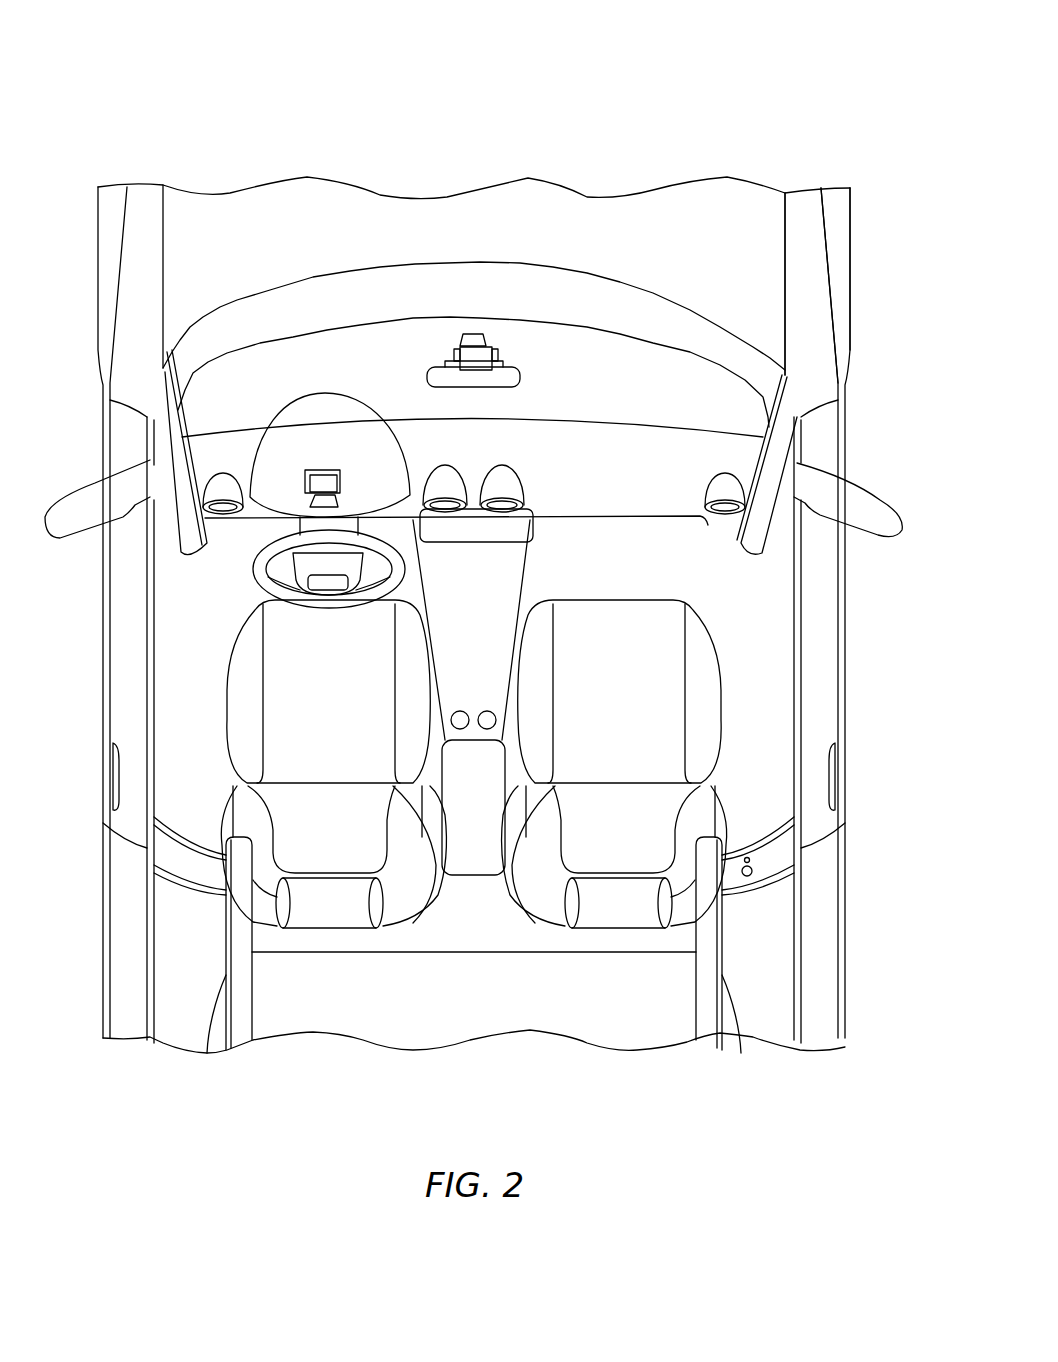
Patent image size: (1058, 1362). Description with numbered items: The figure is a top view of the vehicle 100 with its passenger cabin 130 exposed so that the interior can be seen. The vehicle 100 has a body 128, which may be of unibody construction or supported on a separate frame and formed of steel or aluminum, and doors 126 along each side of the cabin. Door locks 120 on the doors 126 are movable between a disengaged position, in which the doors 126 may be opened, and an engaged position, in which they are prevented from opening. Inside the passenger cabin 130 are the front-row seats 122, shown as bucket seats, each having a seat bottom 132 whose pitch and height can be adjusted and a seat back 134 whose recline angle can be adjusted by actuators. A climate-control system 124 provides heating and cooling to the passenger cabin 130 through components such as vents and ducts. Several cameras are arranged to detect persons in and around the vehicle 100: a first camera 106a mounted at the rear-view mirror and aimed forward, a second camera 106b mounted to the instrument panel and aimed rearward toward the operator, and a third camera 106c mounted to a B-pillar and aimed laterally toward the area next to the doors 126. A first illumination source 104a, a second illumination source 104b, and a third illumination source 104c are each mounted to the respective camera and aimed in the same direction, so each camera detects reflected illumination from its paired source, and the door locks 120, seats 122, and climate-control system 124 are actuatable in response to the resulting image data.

The vehicle 100 is at (212, 76).
The first illumination source 104a is at (495, 345).
The second illumination source 104b is at (305, 484).
The third illumination source 104c is at (748, 856).
The first camera 106a is at (455, 347).
The second camera 106b is at (340, 478).
The third camera 106c is at (748, 877).
The door locks 120 is at (110, 782).
The seats 122 is at (425, 628).
The climate-control system 124 is at (537, 490).
The doors 126 is at (123, 670).
The body 128 is at (812, 290).
The passenger cabin 130 is at (773, 615).
The seat bottom 132 is at (540, 700).
The seat back 134 is at (540, 840).